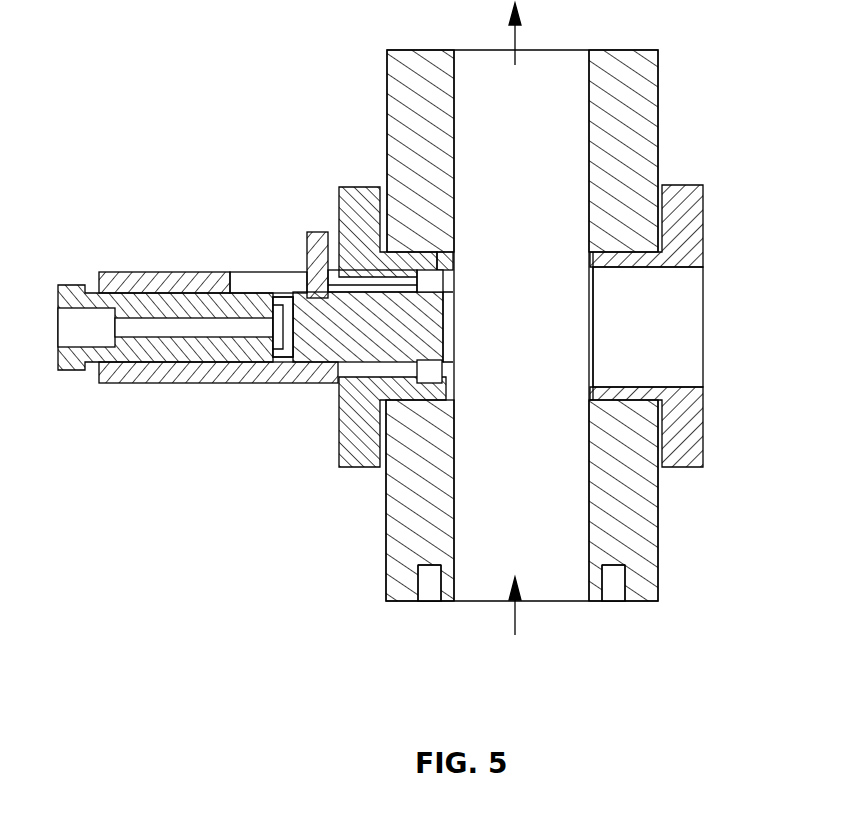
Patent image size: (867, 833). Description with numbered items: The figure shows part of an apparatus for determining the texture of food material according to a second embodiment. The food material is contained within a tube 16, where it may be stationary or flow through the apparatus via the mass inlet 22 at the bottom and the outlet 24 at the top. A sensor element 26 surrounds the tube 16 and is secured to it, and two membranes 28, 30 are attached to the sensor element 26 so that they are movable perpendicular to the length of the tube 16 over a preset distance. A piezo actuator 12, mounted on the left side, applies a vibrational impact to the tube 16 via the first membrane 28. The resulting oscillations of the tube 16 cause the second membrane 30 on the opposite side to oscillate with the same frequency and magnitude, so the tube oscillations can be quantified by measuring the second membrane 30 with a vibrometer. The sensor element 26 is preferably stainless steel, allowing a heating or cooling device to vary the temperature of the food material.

The piezo actuator 12 is at (185, 325).
The tube 16 is at (478, 570).
The mass inlet 22 is at (516, 612).
The outlet 24 is at (515, 40).
The sensor element 26 is at (692, 424).
The first membrane 28 is at (437, 312).
The second membrane 30 is at (687, 333).